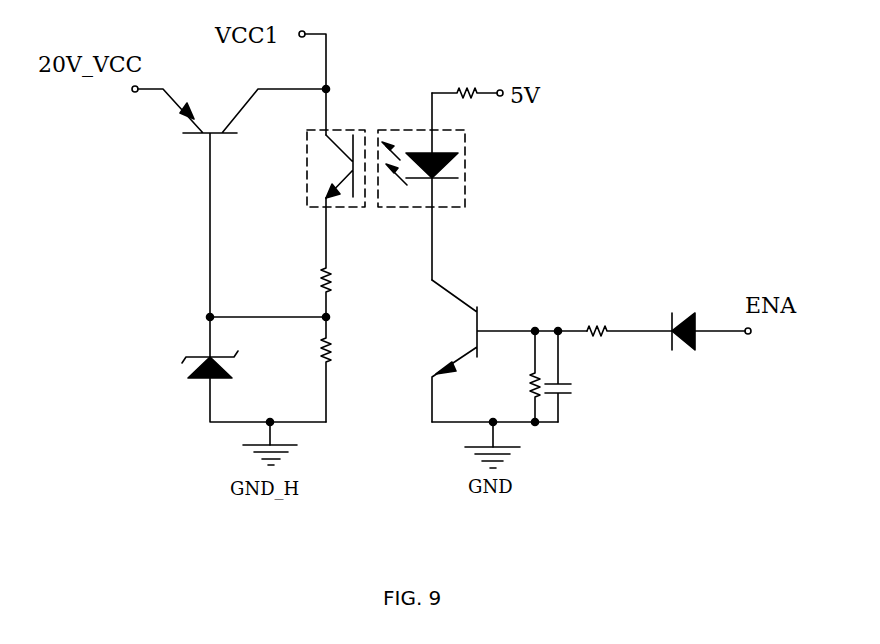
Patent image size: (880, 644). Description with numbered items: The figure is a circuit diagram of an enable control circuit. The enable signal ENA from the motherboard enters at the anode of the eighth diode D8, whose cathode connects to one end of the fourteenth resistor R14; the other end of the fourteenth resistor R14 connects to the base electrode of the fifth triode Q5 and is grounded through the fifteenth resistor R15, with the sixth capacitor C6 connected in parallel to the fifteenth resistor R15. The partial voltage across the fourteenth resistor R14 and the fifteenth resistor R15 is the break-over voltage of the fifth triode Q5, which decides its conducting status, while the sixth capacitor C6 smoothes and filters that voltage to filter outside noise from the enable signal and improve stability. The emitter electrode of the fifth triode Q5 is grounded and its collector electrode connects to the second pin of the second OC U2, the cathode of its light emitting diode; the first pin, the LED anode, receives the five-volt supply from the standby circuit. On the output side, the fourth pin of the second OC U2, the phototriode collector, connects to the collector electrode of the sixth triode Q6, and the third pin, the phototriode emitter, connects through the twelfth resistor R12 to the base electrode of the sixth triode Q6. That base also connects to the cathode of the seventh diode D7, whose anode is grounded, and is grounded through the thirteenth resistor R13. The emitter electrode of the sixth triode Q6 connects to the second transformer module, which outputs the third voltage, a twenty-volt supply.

The sixth triode Q6 is at (232, 197).
The seventh diode D7 is at (191, 369).
The twelfth resistor R12 is at (296, 257).
The thirteenth resistor R13 is at (299, 369).
The second OC U2 is at (383, 186).
The fifth triode Q5 is at (492, 351).
The fifteenth resistor R15 is at (508, 376).
The sixth capacitor C6 is at (580, 376).
The fourteenth resistor R14 is at (623, 313).
The eighth diode D8 is at (708, 316).